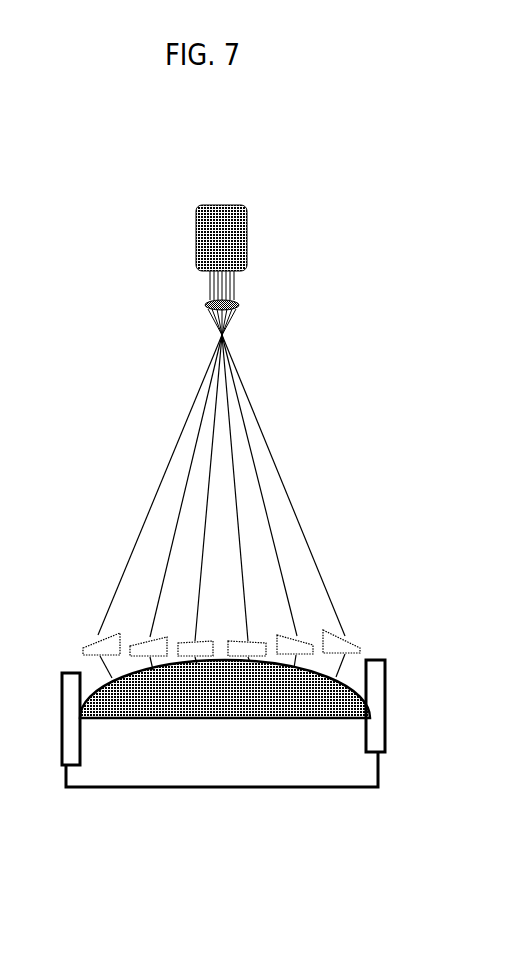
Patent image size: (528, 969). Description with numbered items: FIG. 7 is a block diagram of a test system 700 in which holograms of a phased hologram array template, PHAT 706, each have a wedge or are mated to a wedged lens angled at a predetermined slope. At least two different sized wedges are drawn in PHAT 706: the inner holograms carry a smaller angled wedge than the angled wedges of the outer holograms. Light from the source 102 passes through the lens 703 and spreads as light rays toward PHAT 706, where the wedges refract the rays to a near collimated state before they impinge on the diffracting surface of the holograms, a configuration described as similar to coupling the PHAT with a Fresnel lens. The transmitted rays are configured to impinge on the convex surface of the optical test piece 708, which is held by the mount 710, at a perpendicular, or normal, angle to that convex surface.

The test system 700 is at (257, 163).
The light source 102 is at (248, 230).
The collimating lens 703 is at (208, 309).
The PHAT 706 is at (357, 632).
The dome lens 708 is at (292, 712).
The mounting frame 710 is at (387, 718).